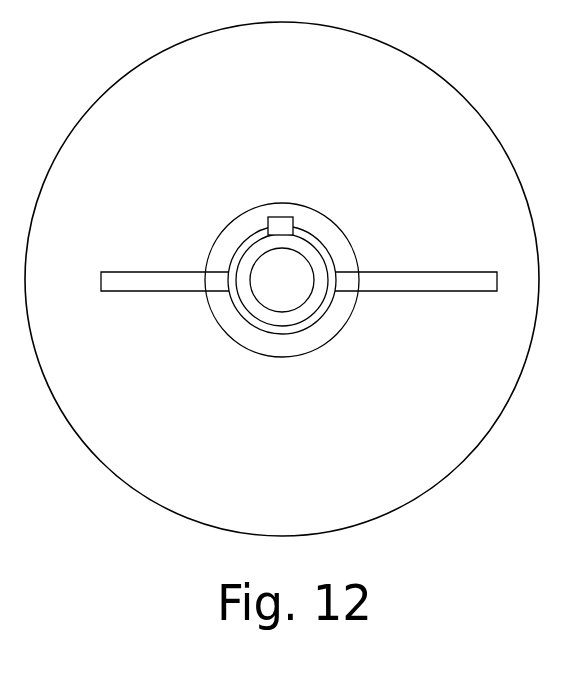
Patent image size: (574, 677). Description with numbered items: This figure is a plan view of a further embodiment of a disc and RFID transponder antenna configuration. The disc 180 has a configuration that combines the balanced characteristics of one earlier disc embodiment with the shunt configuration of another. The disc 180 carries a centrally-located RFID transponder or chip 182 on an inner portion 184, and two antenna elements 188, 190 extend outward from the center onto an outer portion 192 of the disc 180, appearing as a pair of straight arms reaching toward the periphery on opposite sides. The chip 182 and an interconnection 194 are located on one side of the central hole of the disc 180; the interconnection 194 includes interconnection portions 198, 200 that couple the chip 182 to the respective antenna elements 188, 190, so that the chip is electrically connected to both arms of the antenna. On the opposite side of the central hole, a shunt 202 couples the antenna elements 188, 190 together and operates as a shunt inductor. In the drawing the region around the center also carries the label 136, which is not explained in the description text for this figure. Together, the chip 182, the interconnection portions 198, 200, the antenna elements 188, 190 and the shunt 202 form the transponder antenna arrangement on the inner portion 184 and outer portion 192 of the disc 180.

The disc 180 is at (421, 58).
The outer portion 192 is at (297, 118).
The interconnection 194 is at (200, 181).
The inner portion 184 is at (311, 342).
The interconnection portion 198 is at (247, 243).
The interconnection portion 200 is at (310, 235).
The shunt 202 is at (252, 320).
The integrated circuit chip 136 is at (299, 288).
The RFID transponder or chip 182 is at (279, 222).
The antenna element 188 is at (147, 283).
The antenna element 190 is at (400, 285).